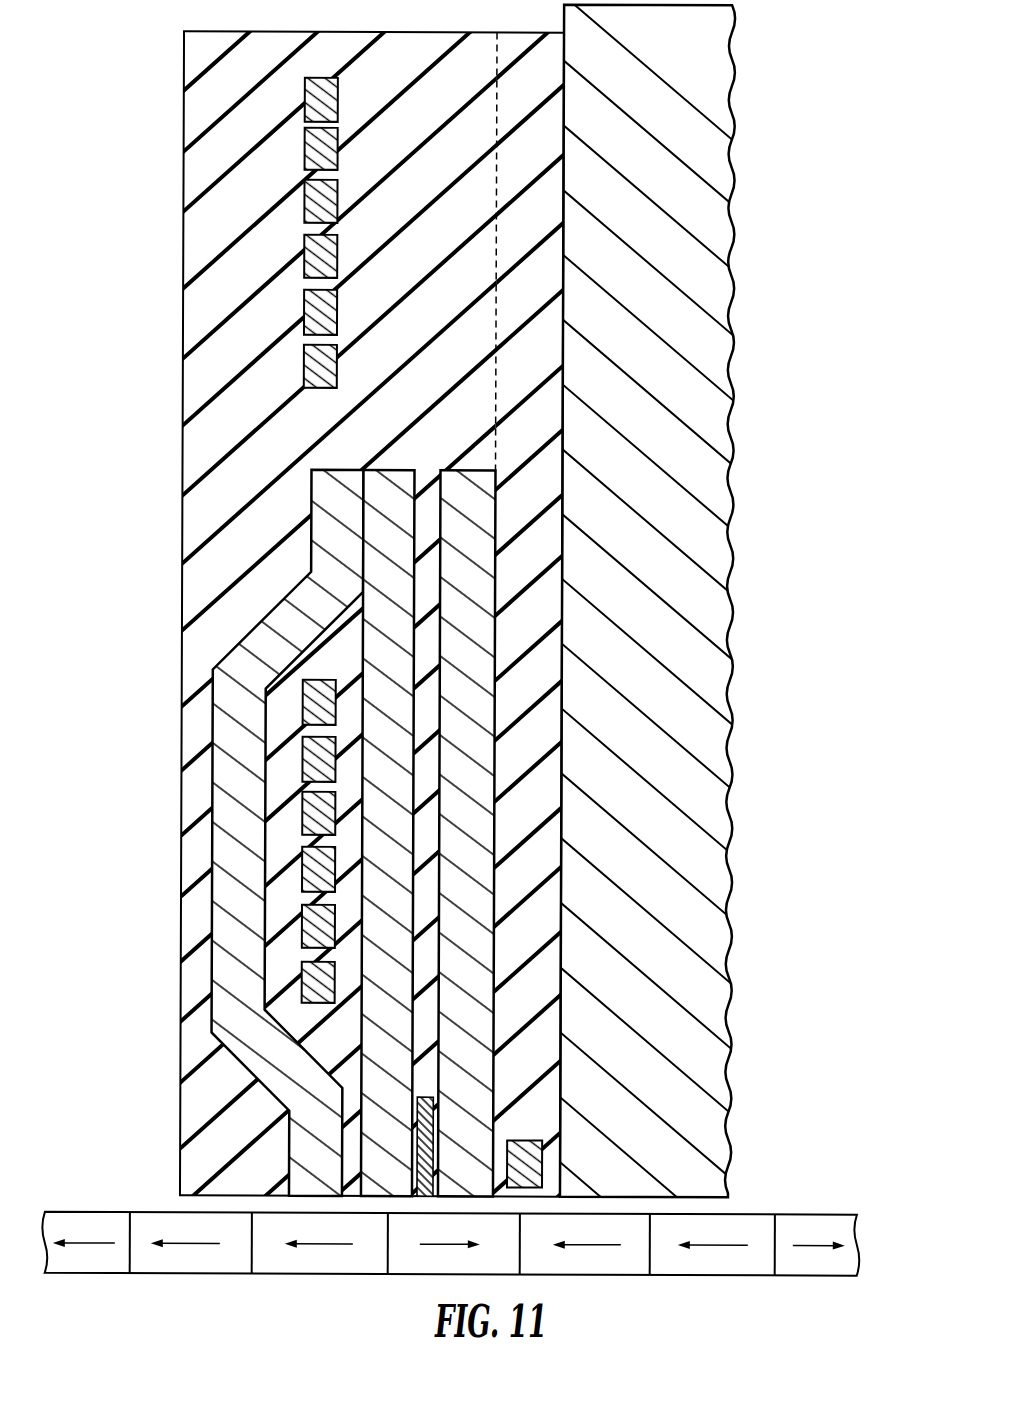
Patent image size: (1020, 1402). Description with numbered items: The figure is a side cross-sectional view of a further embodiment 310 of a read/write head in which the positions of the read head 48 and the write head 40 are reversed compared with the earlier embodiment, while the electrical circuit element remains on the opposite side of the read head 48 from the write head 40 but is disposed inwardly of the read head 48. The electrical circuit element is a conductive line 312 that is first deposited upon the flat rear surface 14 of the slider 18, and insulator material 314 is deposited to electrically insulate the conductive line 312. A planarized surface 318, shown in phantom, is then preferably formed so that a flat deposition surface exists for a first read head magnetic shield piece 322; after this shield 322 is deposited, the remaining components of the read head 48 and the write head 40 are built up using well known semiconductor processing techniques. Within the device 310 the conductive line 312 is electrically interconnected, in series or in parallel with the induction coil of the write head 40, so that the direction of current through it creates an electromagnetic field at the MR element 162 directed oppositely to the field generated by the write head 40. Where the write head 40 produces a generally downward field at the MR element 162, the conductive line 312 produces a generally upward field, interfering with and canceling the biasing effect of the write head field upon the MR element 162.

The flat rear surface 14 is at (563, 270).
The slider 18 is at (725, 603).
The write head 40 is at (270, 852).
The read head 48 is at (467, 907).
The MR element 162 is at (422, 1197).
The read/write head embodiment 310 is at (501, 701).
The conductive line 312 is at (544, 1145).
The insulator material 314 is at (535, 717).
The planarized surface 318 is at (497, 168).
The first read head magnetic shield piece 322 is at (468, 527).